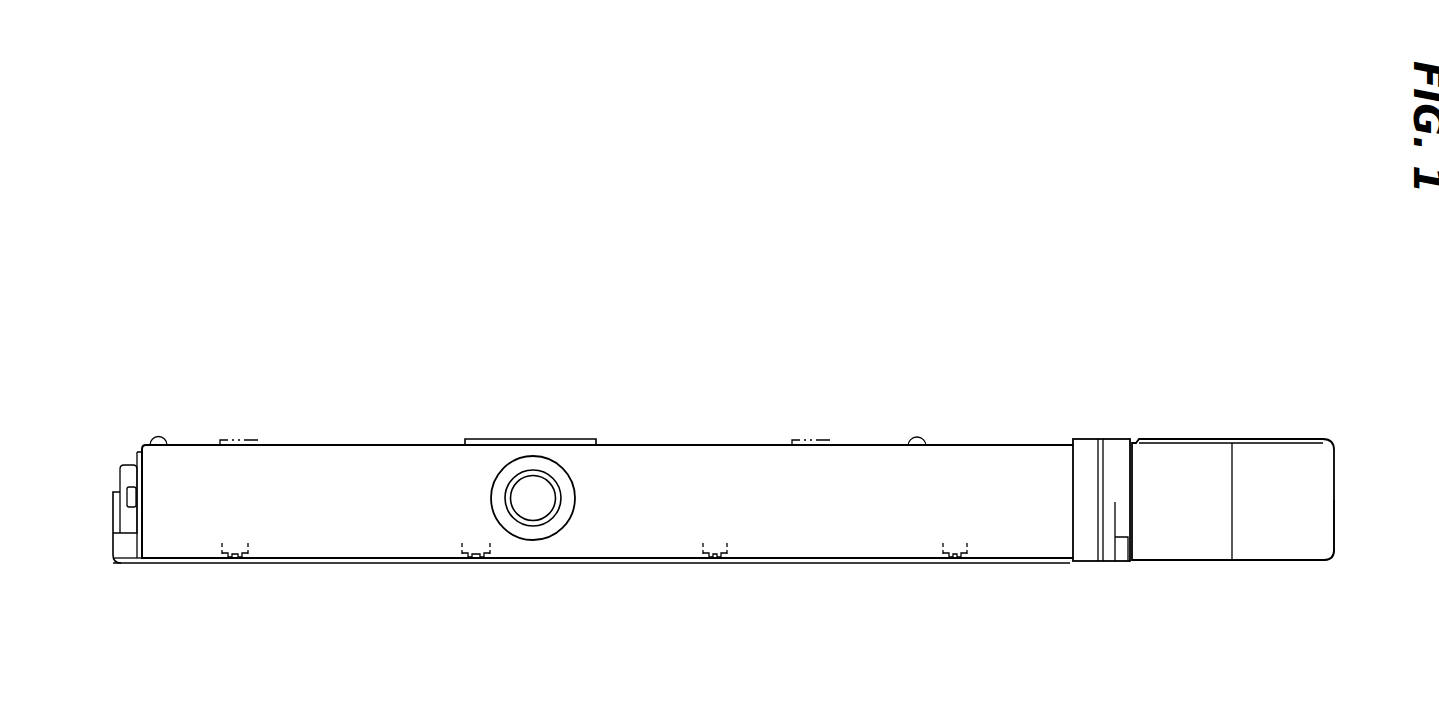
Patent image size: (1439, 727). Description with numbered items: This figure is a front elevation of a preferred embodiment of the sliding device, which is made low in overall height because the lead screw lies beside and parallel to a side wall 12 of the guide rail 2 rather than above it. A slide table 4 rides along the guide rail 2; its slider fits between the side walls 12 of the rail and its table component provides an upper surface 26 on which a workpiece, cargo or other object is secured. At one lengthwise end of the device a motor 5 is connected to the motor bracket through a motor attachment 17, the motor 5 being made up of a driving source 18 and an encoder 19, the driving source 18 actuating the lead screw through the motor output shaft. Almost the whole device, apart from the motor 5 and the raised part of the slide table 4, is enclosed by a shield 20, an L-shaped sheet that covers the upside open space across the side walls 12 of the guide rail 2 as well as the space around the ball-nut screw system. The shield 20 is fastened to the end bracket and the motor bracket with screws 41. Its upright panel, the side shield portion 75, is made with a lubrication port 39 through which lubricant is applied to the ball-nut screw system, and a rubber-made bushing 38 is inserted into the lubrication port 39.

The guide rail 2 is at (117, 497).
The slide table 4 is at (548, 439).
The motor 5 is at (1192, 463).
The side wall 12 is at (130, 524).
The motor attachment 17 is at (1088, 457).
The driving source 18 is at (1188, 543).
The encoder 19 is at (1290, 540).
The shield 20 is at (806, 533).
The upper surface 26 is at (510, 438).
The rubber-made bushing 38 is at (565, 510).
The lubrication port 39 is at (523, 510).
The screws 41 is at (160, 437).
The side shield portion 75 is at (905, 537).